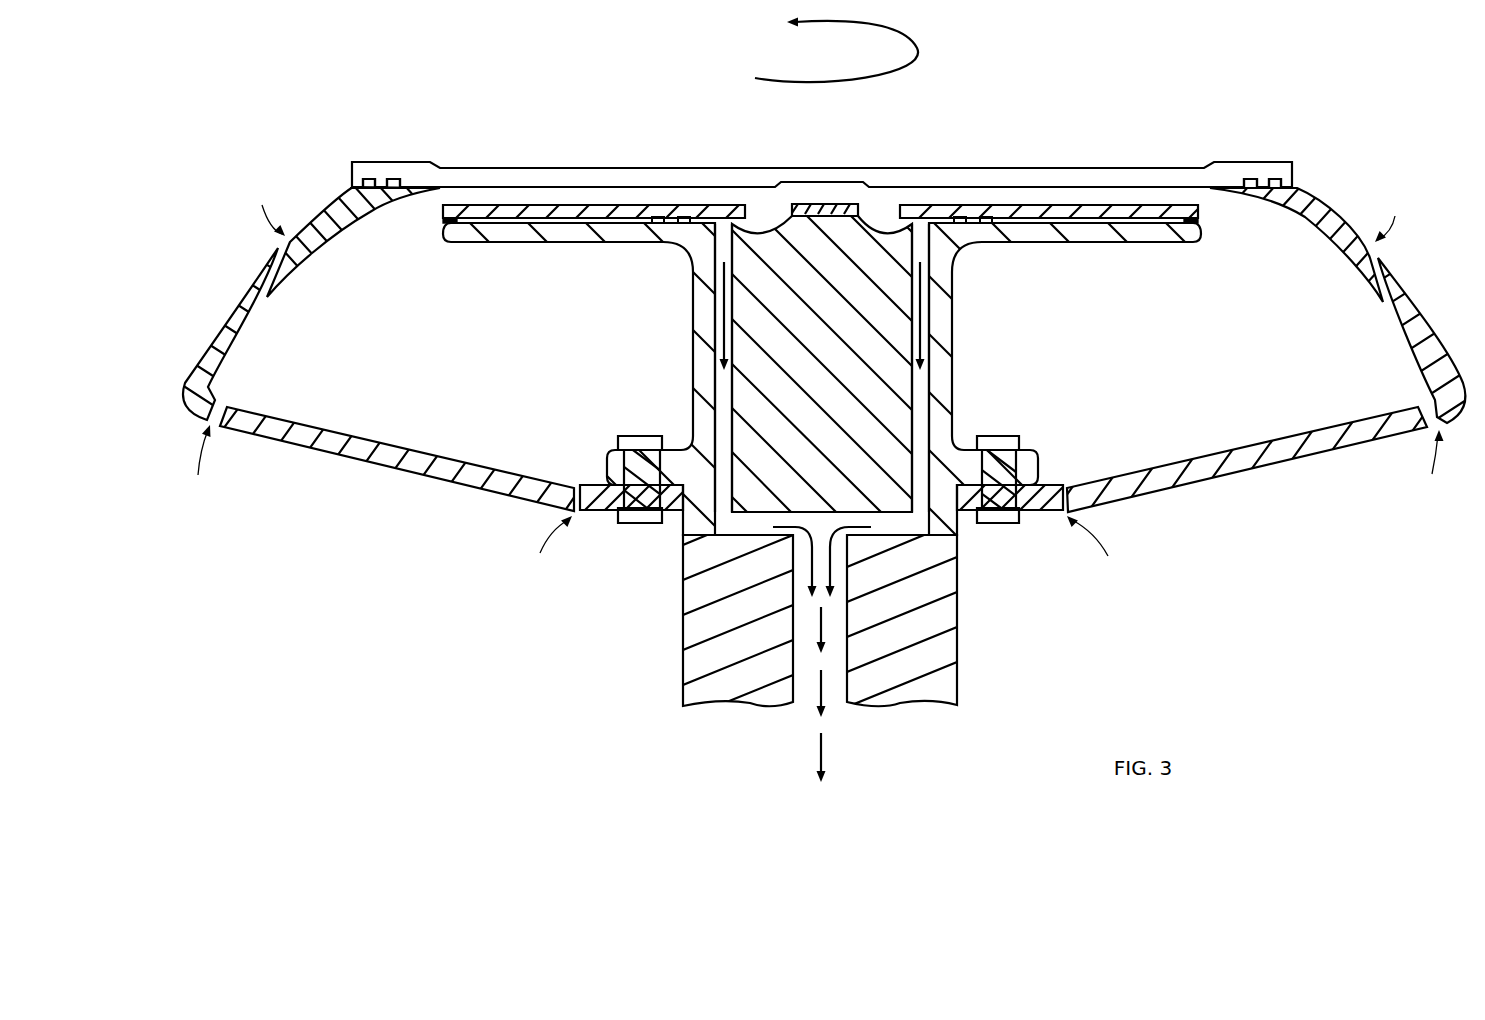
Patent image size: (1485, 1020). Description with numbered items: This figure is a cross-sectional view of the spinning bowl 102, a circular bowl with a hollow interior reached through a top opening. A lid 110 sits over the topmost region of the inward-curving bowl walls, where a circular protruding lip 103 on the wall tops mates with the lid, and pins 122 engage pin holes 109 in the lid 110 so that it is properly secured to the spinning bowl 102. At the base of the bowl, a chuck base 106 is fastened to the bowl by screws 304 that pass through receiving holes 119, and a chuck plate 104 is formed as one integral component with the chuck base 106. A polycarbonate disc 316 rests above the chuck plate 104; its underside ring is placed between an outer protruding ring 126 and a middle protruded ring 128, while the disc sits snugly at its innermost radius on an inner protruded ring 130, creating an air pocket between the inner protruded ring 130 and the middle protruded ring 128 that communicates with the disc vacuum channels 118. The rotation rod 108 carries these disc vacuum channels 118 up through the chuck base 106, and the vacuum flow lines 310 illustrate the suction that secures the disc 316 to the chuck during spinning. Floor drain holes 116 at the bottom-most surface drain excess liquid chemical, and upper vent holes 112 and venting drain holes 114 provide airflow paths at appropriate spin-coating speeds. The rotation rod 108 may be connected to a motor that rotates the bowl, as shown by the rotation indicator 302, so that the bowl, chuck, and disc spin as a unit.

The spinning bowl 102 is at (302, 228).
The circular protruding lip 103 is at (392, 178).
The chuck plate 104 is at (464, 226).
The chuck base 106 is at (693, 350).
The rotation rod 108 is at (692, 627).
The pin holes 109 is at (368, 178).
The lid 110 is at (413, 165).
The upper vent holes 112 is at (829, 211).
The venting drain holes 114 is at (812, 459).
The floor drain holes 116 is at (823, 545).
The disc vacuum channels 118 is at (723, 221).
The receiving holes 119 is at (602, 512).
The pins 122 is at (368, 190).
The outer protruding ring 126 is at (656, 224).
The middle protruded ring 128 is at (682, 224).
The inner protruded ring 130 is at (788, 236).
The rotation indicator 302 is at (836, 50).
The screws 304 is at (643, 524).
The vacuum flow lines 310 is at (737, 300).
The polycarbonate disc 316 is at (440, 213).